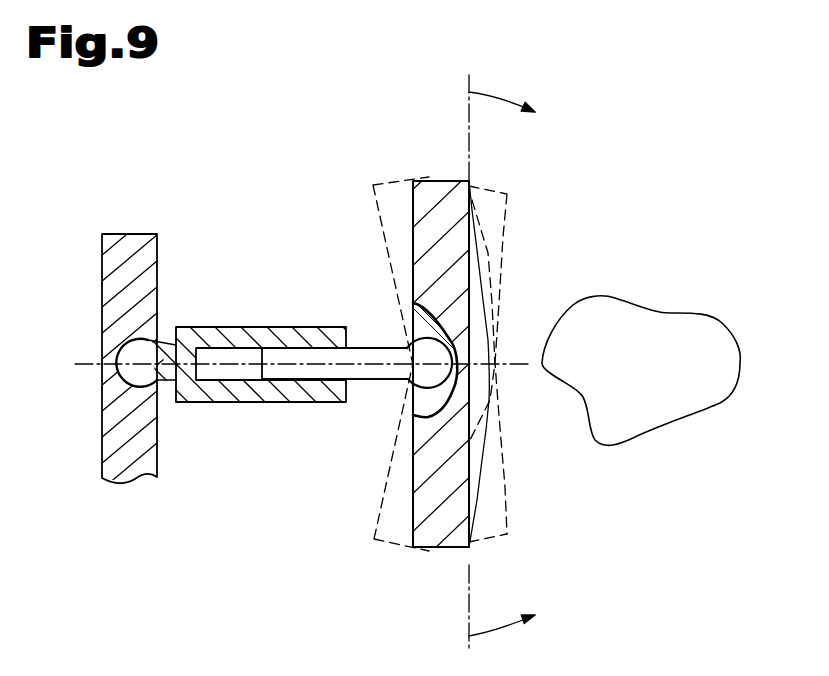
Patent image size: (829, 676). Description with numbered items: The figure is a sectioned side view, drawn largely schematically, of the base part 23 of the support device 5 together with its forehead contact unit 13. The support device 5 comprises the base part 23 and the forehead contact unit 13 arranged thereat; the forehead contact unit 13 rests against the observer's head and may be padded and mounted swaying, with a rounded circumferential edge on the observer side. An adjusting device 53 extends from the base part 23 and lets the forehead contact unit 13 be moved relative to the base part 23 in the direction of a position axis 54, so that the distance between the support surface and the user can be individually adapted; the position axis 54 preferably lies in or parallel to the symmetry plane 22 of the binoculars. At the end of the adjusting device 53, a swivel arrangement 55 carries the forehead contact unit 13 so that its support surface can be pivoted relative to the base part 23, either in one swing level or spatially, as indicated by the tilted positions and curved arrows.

The support device 5 is at (667, 112).
The forehead contact unit 13 is at (534, 267).
The symmetry plane 22 is at (618, 407).
The base part 23 is at (132, 247).
The adjusting device 53 is at (241, 308).
The position axis 54 is at (339, 361).
The swivel arrangement 55 is at (394, 402).